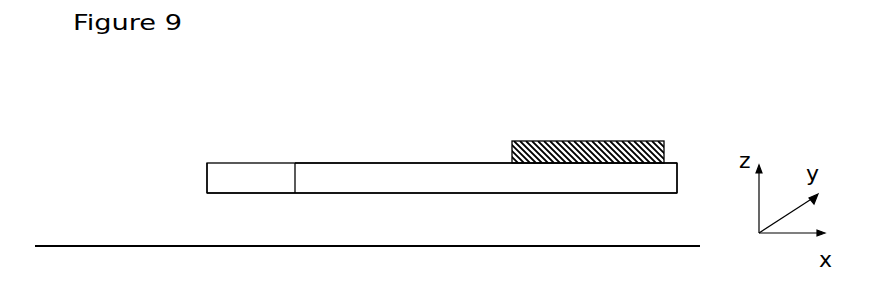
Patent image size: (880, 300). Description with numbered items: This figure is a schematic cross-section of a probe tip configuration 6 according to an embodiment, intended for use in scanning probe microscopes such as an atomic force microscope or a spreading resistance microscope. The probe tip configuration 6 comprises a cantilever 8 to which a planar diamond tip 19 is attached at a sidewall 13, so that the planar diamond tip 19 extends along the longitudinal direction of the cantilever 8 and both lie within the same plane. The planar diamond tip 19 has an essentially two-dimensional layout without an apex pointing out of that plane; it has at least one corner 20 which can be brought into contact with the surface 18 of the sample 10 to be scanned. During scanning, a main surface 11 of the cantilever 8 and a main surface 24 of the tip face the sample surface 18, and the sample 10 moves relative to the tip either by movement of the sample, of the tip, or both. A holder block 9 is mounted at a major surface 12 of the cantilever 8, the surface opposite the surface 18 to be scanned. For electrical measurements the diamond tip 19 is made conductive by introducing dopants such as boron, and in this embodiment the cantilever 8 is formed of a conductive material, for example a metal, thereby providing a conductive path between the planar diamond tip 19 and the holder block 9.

The probe tip configuration 6 is at (722, 62).
The cantilever 8 is at (424, 188).
The holder block 9 is at (663, 148).
The sample 10 is at (683, 274).
The main surface of the cantilever 11 is at (362, 194).
The major surface of the cantilever 12 is at (362, 162).
The sidewall 13 is at (677, 175).
The surface of the sample 18 is at (67, 245).
The planar diamond tip 19 is at (272, 188).
The corner 20 is at (207, 193).
The main surface of the tip 24 is at (247, 193).